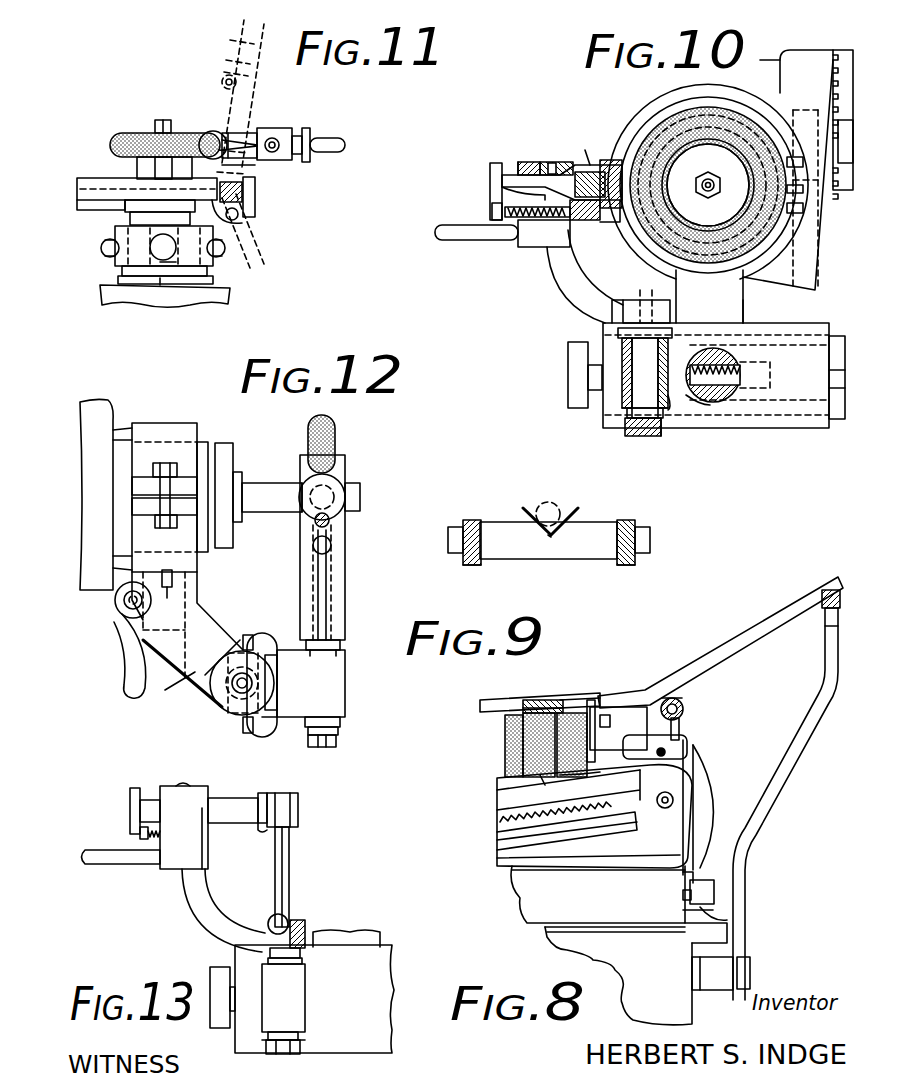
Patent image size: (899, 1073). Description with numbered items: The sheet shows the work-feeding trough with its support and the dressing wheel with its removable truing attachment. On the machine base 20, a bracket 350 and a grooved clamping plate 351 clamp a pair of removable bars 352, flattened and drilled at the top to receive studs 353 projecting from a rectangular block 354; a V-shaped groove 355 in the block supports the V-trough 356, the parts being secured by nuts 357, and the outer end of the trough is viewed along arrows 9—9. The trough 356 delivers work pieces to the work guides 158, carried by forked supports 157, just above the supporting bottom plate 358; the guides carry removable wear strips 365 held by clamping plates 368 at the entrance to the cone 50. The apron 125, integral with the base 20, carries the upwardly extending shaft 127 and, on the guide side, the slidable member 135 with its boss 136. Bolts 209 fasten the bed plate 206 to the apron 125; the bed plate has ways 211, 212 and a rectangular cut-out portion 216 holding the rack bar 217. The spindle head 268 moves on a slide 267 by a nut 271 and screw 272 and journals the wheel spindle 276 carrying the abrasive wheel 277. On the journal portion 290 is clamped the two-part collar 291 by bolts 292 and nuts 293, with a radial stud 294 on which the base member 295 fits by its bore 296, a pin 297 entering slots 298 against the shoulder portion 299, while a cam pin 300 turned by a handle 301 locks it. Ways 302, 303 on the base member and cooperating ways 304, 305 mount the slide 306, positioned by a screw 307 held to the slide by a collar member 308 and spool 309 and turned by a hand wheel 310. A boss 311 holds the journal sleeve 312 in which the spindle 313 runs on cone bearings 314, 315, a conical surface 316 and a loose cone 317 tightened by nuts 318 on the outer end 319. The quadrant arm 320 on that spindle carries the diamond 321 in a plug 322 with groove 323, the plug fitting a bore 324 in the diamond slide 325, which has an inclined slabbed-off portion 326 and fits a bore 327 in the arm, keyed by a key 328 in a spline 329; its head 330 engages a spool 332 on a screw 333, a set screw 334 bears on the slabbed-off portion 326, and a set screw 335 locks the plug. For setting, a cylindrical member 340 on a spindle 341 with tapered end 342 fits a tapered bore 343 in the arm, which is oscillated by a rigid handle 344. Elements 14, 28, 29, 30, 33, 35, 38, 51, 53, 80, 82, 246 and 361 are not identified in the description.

In FIG. 8, the arrows 9— 9 is at (857, 597).
In FIG. 12, the section line 14 is at (172, 583).
In FIG. 8, the base 20 is at (555, 937).
In FIG. 8, the slide plate 28 is at (693, 913).
In FIG. 8, the guide 29 is at (728, 918).
In FIG. 8, the slide block 30 is at (688, 897).
In FIG. 8, the stop 33 is at (688, 884).
In FIG. 8, the bracket 35 is at (718, 892).
In FIG. 8, the carriage block 38 is at (690, 744).
In FIG. 8, the cone 50 is at (505, 740).
In FIG. 8, the plate 51 is at (544, 787).
In FIG. 8, the plate 53 is at (582, 784).
In FIG. 8, the guide block 80 is at (730, 937).
In FIG. 8, the curved plate 82 is at (700, 838).
In FIG. 8, the apron 125 is at (522, 893).
In FIG. 8, the shaft 127 is at (658, 752).
In FIG. 8, the slidable member 135 is at (678, 732).
In FIG. 8, the boss 136 is at (683, 712).
In FIG. 8, the forked supports 157 is at (682, 705).
In FIG. 8, the work guides 158 is at (540, 700).
In FIG. 8, the bed plate 206 is at (500, 858).
In FIG. 8, the bolts 209 is at (594, 816).
In FIG. 8, the ways 211 is at (500, 838).
In FIG. 8, the ways 212 is at (497, 782).
In FIG. 8, the rectangular cut-out portion 216 is at (500, 800).
In FIG. 8, the rack bar 217 is at (505, 818).
In FIG. 8, the rack teeth 246 is at (567, 831).
In FIG. 10, the movable slide 267 is at (812, 283).
In FIG. 11, the spindle head 268 is at (122, 298).
In FIG. 10, the spindle head 268 is at (648, 103).
In FIG. 12, the spindle head 268 is at (95, 408).
In FIG. 10, the nut 271 is at (796, 115).
In FIG. 10, the screw 272 is at (835, 52).
In FIG. 11, the wheel spindle 276 is at (158, 168).
In FIG. 10, the wheel spindle 276 is at (706, 192).
In FIG. 12, the wheel spindle 276 is at (272, 483).
In FIG. 11, the abrasive wheel 277 is at (122, 138).
In FIG. 10, the abrasive wheel 277 is at (702, 106).
In FIG. 12, the abrasive wheel 277 is at (332, 432).
In FIG. 11, the journal portion 290 is at (122, 276).
In FIG. 10, the journal portion 290 is at (706, 150).
In FIG. 12, the journal portion 290 is at (205, 442).
In FIG. 10, the two-part collar 291 is at (818, 250).
In FIG. 12, the two-part collar 291 is at (160, 430).
In FIG. 11, the bolts 292 is at (104, 250).
In FIG. 10, the bolts 292 is at (748, 100).
In FIG. 12, the bolts 292 is at (170, 462).
In FIG. 10, the nuts 293 is at (770, 262).
In FIG. 12, the nuts 293 is at (165, 520).
In FIG. 11, the stud 294 is at (168, 260).
In FIG. 12, the stud 294 is at (200, 608).
In FIG. 11, the base member 295 is at (158, 280).
In FIG. 10, the base member 295 is at (743, 304).
In FIG. 12, the base member 295 is at (197, 685).
In FIG. 13, the base member 295 is at (352, 935).
In FIG. 12, the bore 296 is at (180, 660).
In FIG. 12, the pin 297 is at (165, 580).
In FIG. 12, the slots 298 is at (175, 575).
In FIG. 12, the shoulder portion 299 is at (232, 535).
In FIG. 12, the cam pin 300 is at (122, 612).
In FIG. 10, the handle 301 is at (676, 288).
In FIG. 12, the handle 301 is at (125, 684).
In FIG. 11, the ways 302 is at (82, 186).
In FIG. 10, the ways 302 is at (838, 336).
In FIG. 12, the ways 302 is at (262, 660).
In FIG. 10, the ways 303 is at (835, 420).
In FIG. 12, the ways 303 is at (262, 703).
In FIG. 12, the cooperating ways 304 is at (243, 640).
In FIG. 12, the cooperating ways 305 is at (248, 722).
In FIG. 11, the slide 306 is at (98, 194).
In FIG. 10, the slide 306 is at (805, 432).
In FIG. 12, the slide 306 is at (272, 722).
In FIG. 13, the slide 306 is at (378, 963).
In FIG. 11, the screw 307 is at (240, 222).
In FIG. 10, the screw 307 is at (752, 370).
In FIG. 12, the screw 307 is at (262, 683).
In FIG. 11, the collar member 308 is at (243, 214).
In FIG. 12, the collar member 308 is at (225, 670).
In FIG. 11, the spool 309 is at (246, 200).
In FIG. 10, the spool 309 is at (622, 398).
In FIG. 11, the hand wheel 310 is at (256, 188).
In FIG. 10, the hand wheel 310 is at (572, 390).
In FIG. 12, the hand wheel 310 is at (218, 700).
In FIG. 13, the hand wheel 310 is at (216, 970).
In FIG. 11, the boss 311 is at (258, 168).
In FIG. 10, the boss 311 is at (628, 405).
In FIG. 12, the boss 311 is at (345, 688).
In FIG. 13, the boss 311 is at (300, 1010).
In FIG. 10, the journal sleeve 312 is at (695, 405).
In FIG. 10, the spindle 313 is at (635, 365).
In FIG. 12, the spindle 313 is at (341, 642).
In FIG. 13, the spindle 313 is at (300, 954).
In FIG. 10, the cone bearing 314 is at (620, 345).
In FIG. 12, the cone bearing 314 is at (340, 650).
In FIG. 13, the cone bearing 314 is at (302, 962).
In FIG. 10, the cone bearing 315 is at (630, 420).
In FIG. 12, the cone bearing 315 is at (340, 722).
In FIG. 13, the cone bearing 315 is at (300, 1036).
In FIG. 10, the conical surface 316 is at (670, 313).
In FIG. 10, the cone 317 is at (670, 412).
In FIG. 12, the cone 317 is at (338, 732).
In FIG. 13, the cone 317 is at (265, 1040).
In FIG. 10, the nuts 318 is at (665, 430).
In FIG. 12, the nuts 318 is at (335, 746).
In FIG. 13, the nuts 318 is at (300, 1050).
In FIG. 10, the outer end 319 is at (642, 438).
In FIG. 11, the quadrant arm 320 is at (212, 118).
In FIG. 10, the quadrant arm 320 is at (566, 290).
In FIG. 12, the quadrant arm 320 is at (345, 595).
In FIG. 13, the quadrant arm 320 is at (202, 905).
In FIG. 10, the diamond 321 is at (608, 222).
In FIG. 13, the diamond 321 is at (262, 830).
In FIG. 10, the plug 322 is at (610, 160).
In FIG. 13, the plug 322 is at (265, 793).
In FIG. 10, the groove 323 is at (600, 220).
In FIG. 10, the bore 324 is at (590, 172).
In FIG. 11, the diamond slide 325 is at (235, 133).
In FIG. 10, the diamond slide 325 is at (502, 182).
In FIG. 12, the diamond slide 325 is at (302, 508).
In FIG. 13, the diamond slide 325 is at (227, 818).
In FIG. 11, the slabbed-off portion 326 is at (256, 130).
In FIG. 10, the slabbed-off portion 326 is at (512, 165).
In FIG. 12, the slabbed-off portion 326 is at (300, 497).
In FIG. 13, the slabbed-off portion 326 is at (152, 798).
In FIG. 10, the bore 327 is at (525, 160).
In FIG. 10, the key 328 is at (575, 210).
In FIG. 10, the spline 329 is at (505, 193).
In FIG. 11, the head 330 is at (308, 136).
In FIG. 10, the head 330 is at (490, 166).
In FIG. 12, the head 330 is at (360, 495).
In FIG. 13, the head 330 is at (130, 794).
In FIG. 10, the spool 332 is at (492, 209).
In FIG. 12, the spool 332 is at (330, 520).
In FIG. 13, the spool 332 is at (140, 834).
In FIG. 10, the screw 333 is at (520, 247).
In FIG. 13, the screw 333 is at (156, 840).
In FIG. 11, the set screw 334 is at (278, 136).
In FIG. 10, the set screw 334 is at (545, 162).
In FIG. 10, the set screw 335 is at (588, 150).
In FIG. 13, the cylindrical member 340 is at (292, 811).
In FIG. 13, the spindle 341 is at (286, 864).
In FIG. 13, the tapered end 342 is at (300, 920).
In FIG. 10, the tapered bore 343 is at (636, 300).
In FIG. 13, the tapered bore 343 is at (272, 920).
In FIG. 11, the rigid handle 344 is at (345, 145).
In FIG. 10, the rigid handle 344 is at (445, 240).
In FIG. 12, the rigid handle 344 is at (332, 548).
In FIG. 13, the rigid handle 344 is at (100, 862).
In FIG. 8, the bracket 350 is at (712, 990).
In FIG. 8, the grooved clamping plate 351 is at (750, 970).
In FIG. 9, the removable bars 352 is at (472, 565).
In FIG. 8, the removable bars 352 is at (825, 625).
In FIG. 9, the studs 353 is at (482, 522).
In FIG. 9, the rectangular parallelopipedal block 354 is at (512, 560).
In FIG. 8, the rectangular parallelopipedal block 354 is at (822, 608).
In FIG. 9, the V-shaped groove 355 is at (553, 533).
In FIG. 9, the V-trough 356 is at (562, 510).
In FIG. 8, the V-trough 356 is at (748, 650).
In FIG. 9, the nuts 357 is at (452, 535).
In FIG. 8, the supporting bottom plate 358 is at (617, 731).
In FIG. 8, the plate 361 is at (618, 690).
In FIG. 8, the removable wear strips 365 is at (593, 690).
In FIG. 8, the removable clamping plates 368 is at (522, 700).